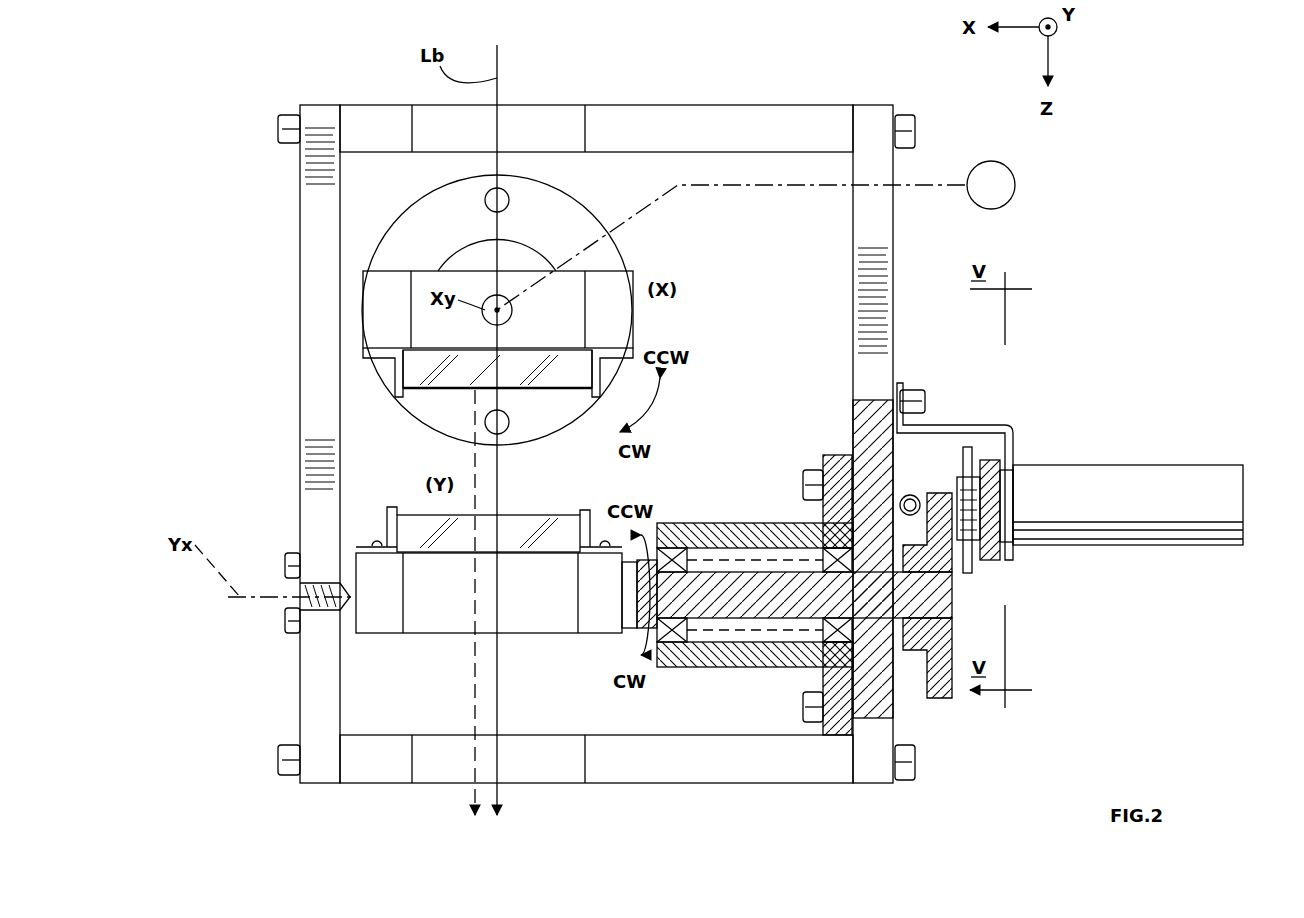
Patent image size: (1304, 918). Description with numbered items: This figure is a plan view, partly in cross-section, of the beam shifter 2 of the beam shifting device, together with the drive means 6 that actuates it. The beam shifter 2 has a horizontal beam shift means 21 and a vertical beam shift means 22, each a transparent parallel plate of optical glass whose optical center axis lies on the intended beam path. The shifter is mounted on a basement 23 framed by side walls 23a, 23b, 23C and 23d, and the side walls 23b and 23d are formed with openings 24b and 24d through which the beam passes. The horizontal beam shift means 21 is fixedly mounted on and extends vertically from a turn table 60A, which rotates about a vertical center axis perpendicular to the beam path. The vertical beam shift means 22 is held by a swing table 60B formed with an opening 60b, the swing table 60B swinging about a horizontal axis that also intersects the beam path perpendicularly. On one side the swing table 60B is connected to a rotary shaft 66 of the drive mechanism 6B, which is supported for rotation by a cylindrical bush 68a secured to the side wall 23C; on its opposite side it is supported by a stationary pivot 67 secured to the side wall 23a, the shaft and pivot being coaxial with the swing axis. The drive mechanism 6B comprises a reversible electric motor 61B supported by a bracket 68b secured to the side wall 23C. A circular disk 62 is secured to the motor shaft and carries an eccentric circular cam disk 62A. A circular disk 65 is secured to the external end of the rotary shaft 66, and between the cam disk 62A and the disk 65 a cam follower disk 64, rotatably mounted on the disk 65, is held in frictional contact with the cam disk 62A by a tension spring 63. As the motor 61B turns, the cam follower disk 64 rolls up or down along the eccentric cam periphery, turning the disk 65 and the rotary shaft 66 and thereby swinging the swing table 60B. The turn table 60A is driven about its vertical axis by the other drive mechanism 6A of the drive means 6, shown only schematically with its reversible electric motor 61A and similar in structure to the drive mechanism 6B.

The beam shifter 2 is at (583, 503).
The drive means 6 is at (1112, 228).
The drive mechanism 6A is at (1032, 205).
The drive mechanism 6B is at (1048, 338).
The horizontal beam shift means 21 is at (535, 390).
The vertical beam shift means 22 is at (515, 515).
The basement 23 is at (776, 363).
The side wall 23a is at (300, 312).
The side wall 23b is at (685, 105).
The side wall 23C is at (893, 290).
The side wall 23d is at (715, 783).
The opening 24b is at (585, 130).
The opening 24d is at (412, 760).
The turn table 60A is at (578, 203).
The swing table 60B is at (535, 628).
The opening 60b is at (530, 688).
The reversible electric motor 61A is at (975, 170).
The reversible electric motor 61B is at (1140, 470).
The circular disk 62 is at (983, 470).
The circular cam disk 62A is at (975, 455).
The tension spring 63 is at (945, 500).
The cam follower disk 64 is at (1010, 555).
The circular disk 65 is at (945, 700).
The rotary shaft 66 is at (757, 585).
The stationary pivot 67 is at (345, 615).
The cylindrical bush 68a is at (718, 667).
The bracket 68b is at (930, 425).